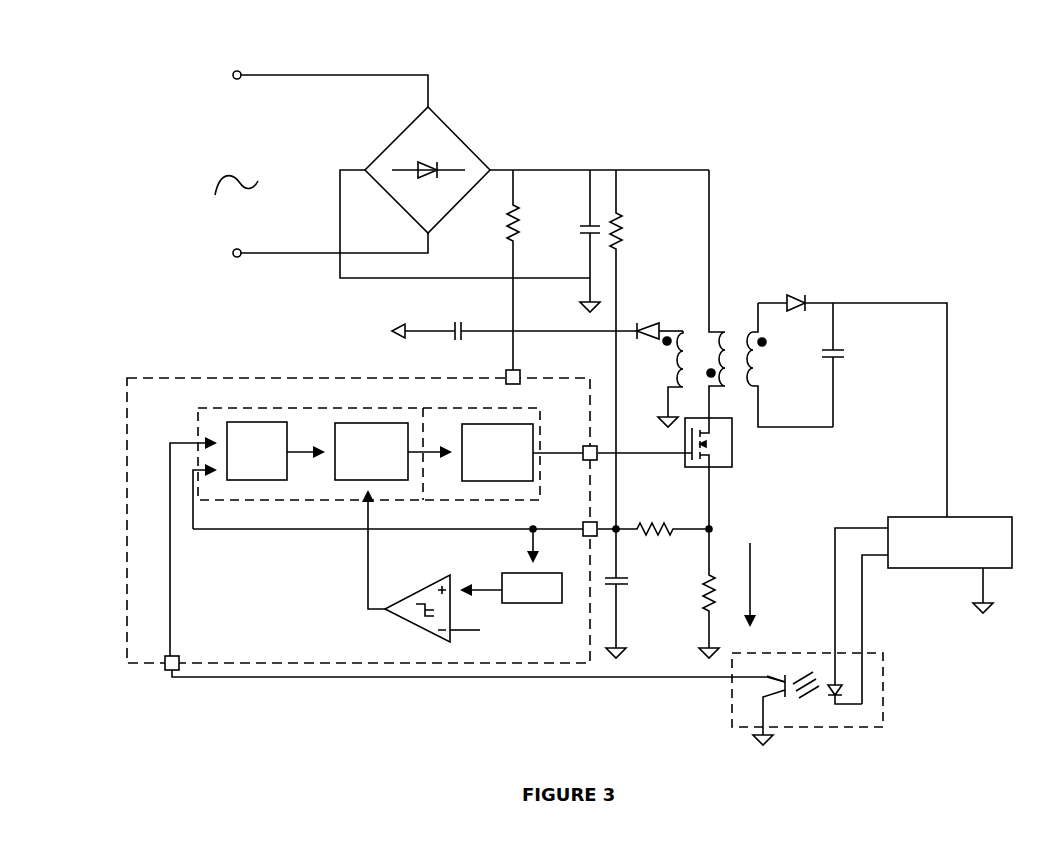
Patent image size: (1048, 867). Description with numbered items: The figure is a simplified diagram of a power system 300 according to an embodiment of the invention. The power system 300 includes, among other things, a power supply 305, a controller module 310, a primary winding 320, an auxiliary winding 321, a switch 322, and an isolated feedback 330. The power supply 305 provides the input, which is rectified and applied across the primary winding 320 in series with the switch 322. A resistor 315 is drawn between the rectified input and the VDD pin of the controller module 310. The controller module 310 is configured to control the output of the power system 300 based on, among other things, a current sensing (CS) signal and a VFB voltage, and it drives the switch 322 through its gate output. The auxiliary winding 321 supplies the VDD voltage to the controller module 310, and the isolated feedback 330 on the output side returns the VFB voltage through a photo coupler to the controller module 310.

The power system 300 is at (790, 118).
The power supply 305 is at (429, 88).
The controller module 310 is at (228, 408).
The startup resistor R1 315 is at (513, 290).
The primary winding 320 is at (728, 330).
The auxiliary winding 321 is at (660, 322).
The switch 322 is at (733, 455).
The isolated feedback 330 is at (972, 517).